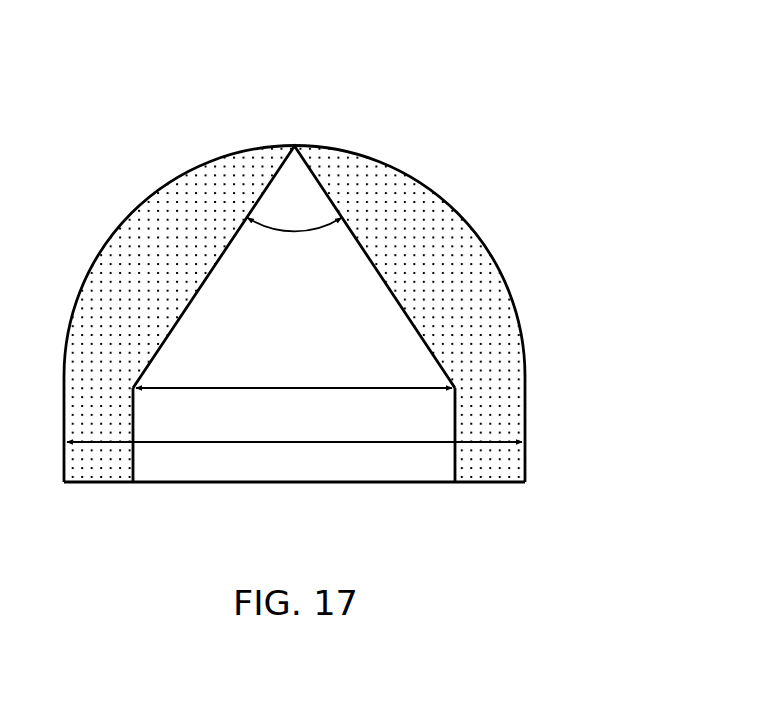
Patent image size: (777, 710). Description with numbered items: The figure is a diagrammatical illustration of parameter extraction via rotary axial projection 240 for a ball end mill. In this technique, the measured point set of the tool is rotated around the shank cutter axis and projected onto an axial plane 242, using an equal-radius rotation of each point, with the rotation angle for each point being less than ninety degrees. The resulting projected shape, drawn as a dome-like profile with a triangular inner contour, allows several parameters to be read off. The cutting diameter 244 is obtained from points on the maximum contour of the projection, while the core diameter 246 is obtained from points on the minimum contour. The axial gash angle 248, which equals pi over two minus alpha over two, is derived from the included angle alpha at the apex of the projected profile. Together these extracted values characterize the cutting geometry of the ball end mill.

The rotary axial projection 240 is at (340, 288).
The axial plane 242 is at (487, 246).
The cutting diameter (D1) 244 is at (347, 444).
The core diameter (D2) 246 is at (360, 386).
The axial gash angle 248 is at (318, 236).